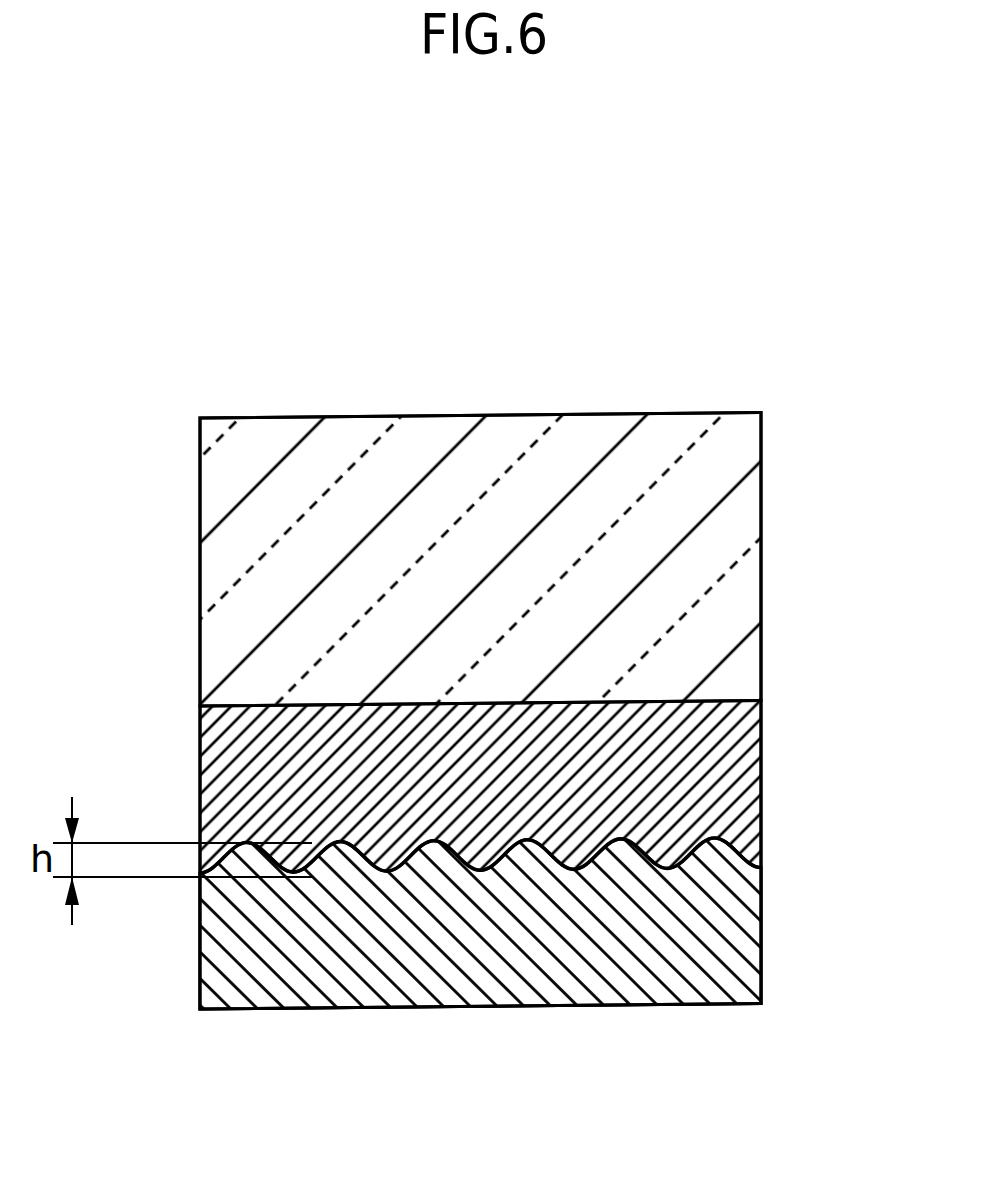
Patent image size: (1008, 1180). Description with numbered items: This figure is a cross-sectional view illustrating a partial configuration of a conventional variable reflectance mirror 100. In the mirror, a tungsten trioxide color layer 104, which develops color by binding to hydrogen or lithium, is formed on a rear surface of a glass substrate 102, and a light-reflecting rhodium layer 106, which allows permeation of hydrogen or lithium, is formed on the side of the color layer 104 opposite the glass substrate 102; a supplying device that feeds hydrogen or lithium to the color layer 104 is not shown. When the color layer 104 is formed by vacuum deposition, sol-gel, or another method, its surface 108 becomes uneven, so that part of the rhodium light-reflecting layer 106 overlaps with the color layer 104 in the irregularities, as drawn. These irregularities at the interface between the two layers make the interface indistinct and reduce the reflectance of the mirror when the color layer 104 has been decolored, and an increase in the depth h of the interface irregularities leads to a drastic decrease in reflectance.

The variable reflectance mirror 100 is at (717, 287).
The glass substrate 102 is at (762, 567).
The tungsten trioxide color layer 104 is at (762, 768).
The light-reflecting rhodium layer 106 is at (762, 961).
The surface 108 is at (722, 881).